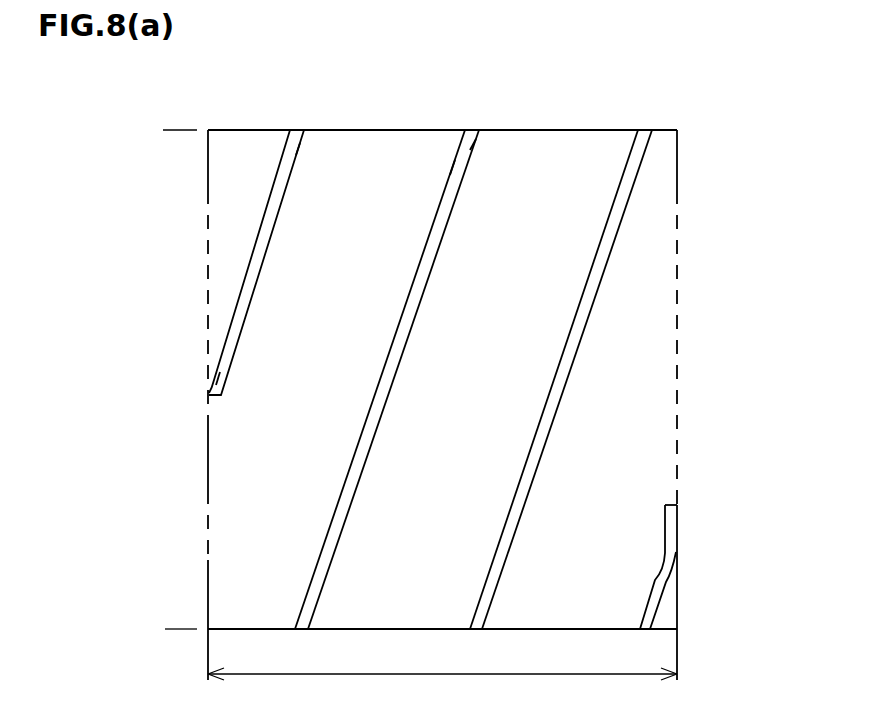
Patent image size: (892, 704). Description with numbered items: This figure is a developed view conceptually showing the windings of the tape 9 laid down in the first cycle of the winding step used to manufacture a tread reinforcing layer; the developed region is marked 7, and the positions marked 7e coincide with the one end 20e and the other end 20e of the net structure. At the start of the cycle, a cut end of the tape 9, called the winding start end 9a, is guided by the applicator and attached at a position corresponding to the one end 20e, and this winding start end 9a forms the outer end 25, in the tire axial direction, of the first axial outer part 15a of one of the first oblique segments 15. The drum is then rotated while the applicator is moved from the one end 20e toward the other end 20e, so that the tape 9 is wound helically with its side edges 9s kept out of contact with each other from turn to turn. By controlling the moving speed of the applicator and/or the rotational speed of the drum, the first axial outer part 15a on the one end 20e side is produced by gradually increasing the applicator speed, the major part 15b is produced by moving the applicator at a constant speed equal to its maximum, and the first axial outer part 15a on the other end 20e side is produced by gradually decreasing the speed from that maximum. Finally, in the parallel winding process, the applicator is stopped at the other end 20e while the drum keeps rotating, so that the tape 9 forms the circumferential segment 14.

The tire tread 7 is at (627, 116).
The tread edge 7e is at (466, 317).
The end of the net structure 20e is at (207, 190).
The tape 9 is at (285, 172).
The side edges of the tape 9s is at (300, 153).
The winding start end 9a is at (144, 388).
The outer end 25 is at (215, 381).
The first oblique segment 15 is at (520, 102).
The first axial outer part 15a is at (218, 372).
The major part 15b is at (467, 152).
The circumferential segment 14 is at (672, 525).